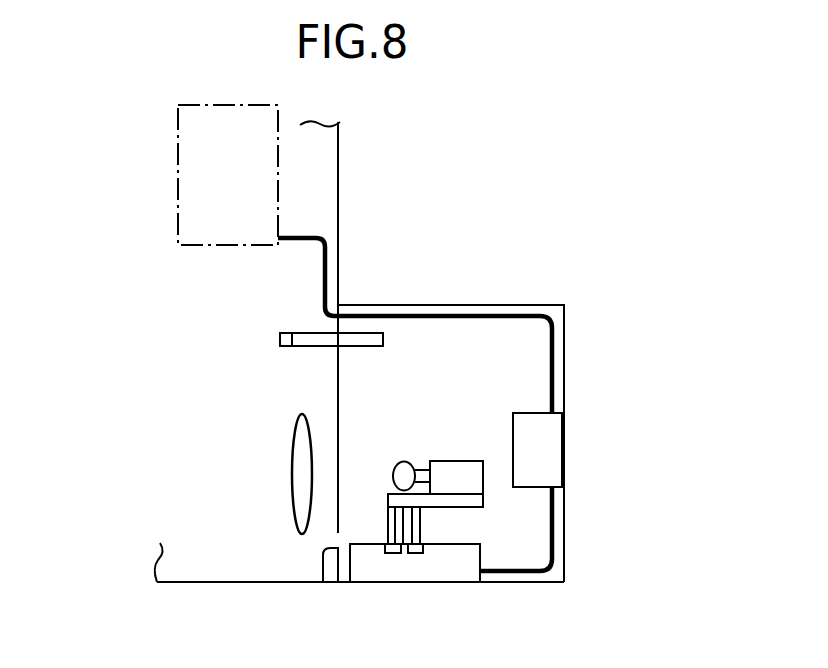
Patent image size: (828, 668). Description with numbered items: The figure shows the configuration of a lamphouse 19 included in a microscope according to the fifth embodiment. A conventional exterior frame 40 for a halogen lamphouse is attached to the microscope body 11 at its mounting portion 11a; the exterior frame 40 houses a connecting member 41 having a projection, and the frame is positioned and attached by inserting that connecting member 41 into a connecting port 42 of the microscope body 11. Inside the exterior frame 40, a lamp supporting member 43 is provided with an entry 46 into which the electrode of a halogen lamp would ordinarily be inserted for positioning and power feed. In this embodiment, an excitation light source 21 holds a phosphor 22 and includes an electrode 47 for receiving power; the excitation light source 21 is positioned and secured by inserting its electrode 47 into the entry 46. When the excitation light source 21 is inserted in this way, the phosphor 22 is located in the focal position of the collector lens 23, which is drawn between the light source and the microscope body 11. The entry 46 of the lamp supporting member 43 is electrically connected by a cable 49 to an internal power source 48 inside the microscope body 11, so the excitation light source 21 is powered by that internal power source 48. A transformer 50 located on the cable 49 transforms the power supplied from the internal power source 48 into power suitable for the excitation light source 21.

The microscope body 11 is at (253, 584).
The mounting portion 11a is at (326, 556).
The lamphouse 19 is at (558, 272).
The excitation light source 21 is at (455, 461).
The phosphor 22 is at (403, 461).
The collector lens 23 is at (292, 477).
The exterior frame 40 is at (458, 304).
The connecting member 41 is at (359, 348).
The connecting port 42 is at (279, 340).
The lamp supporting member 43 is at (372, 544).
The entry 46 is at (393, 553).
The electrode 47 is at (424, 538).
The internal power source 48 is at (178, 183).
The cable 49 is at (487, 320).
The transformer 50 is at (550, 452).